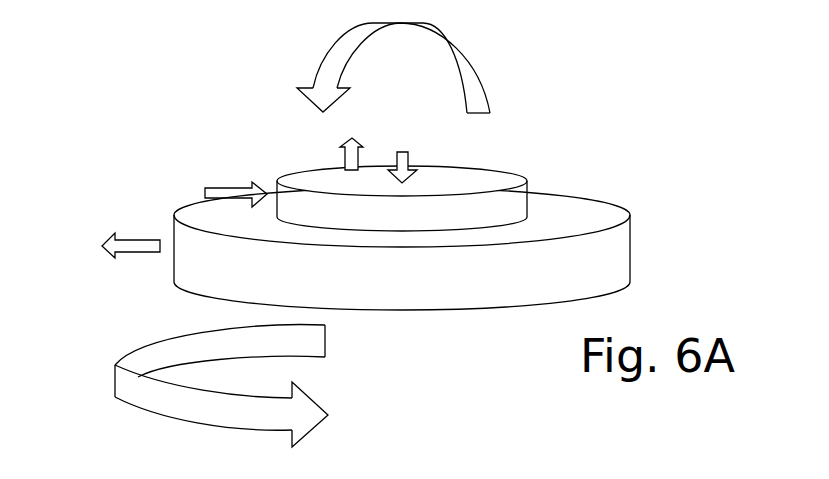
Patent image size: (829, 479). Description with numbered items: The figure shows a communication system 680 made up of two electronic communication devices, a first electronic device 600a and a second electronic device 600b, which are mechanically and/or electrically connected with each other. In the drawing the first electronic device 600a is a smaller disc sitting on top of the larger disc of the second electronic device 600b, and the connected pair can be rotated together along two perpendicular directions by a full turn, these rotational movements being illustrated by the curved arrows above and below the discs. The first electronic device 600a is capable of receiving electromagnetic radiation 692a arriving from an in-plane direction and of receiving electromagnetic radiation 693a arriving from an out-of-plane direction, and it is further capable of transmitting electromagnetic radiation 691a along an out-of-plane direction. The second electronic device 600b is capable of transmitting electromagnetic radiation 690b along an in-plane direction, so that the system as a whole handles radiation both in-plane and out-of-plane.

The communication system 680 is at (642, 78).
The first electronic device 600a is at (493, 180).
The second electronic device 600b is at (587, 217).
The electromagnetic radiation 690b is at (133, 240).
The electromagnetic radiation 691a is at (343, 162).
The electromagnetic radiation 692a is at (234, 192).
The electromagnetic radiation 693a is at (400, 150).